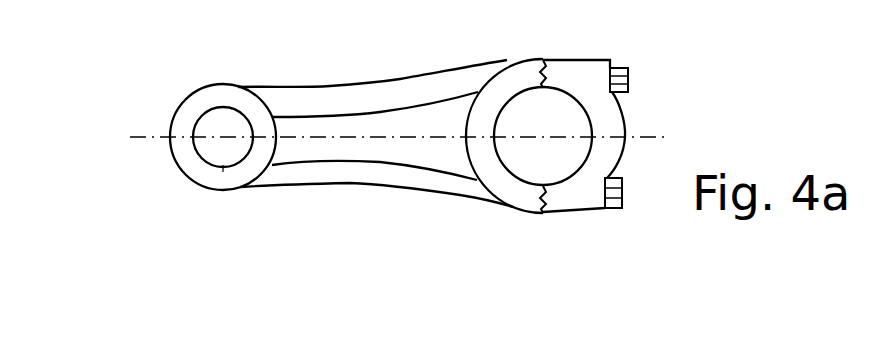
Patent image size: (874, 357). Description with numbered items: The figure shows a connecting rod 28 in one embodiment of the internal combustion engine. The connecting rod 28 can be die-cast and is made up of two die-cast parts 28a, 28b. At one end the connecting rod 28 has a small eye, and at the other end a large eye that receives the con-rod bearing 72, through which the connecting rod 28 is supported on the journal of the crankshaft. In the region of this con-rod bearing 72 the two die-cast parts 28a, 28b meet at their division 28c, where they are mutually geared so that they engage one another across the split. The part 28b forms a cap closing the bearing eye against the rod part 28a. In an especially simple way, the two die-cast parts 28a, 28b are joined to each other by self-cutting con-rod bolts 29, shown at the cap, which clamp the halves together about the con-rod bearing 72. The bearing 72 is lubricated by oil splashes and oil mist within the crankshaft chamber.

The connecting rod 28 is at (332, 103).
The die-cast part 28a is at (518, 75).
The die-cast part 28b is at (580, 75).
The division 28c is at (550, 72).
The cap bolts 29 is at (622, 193).
The con-rod bearing 72 is at (505, 104).